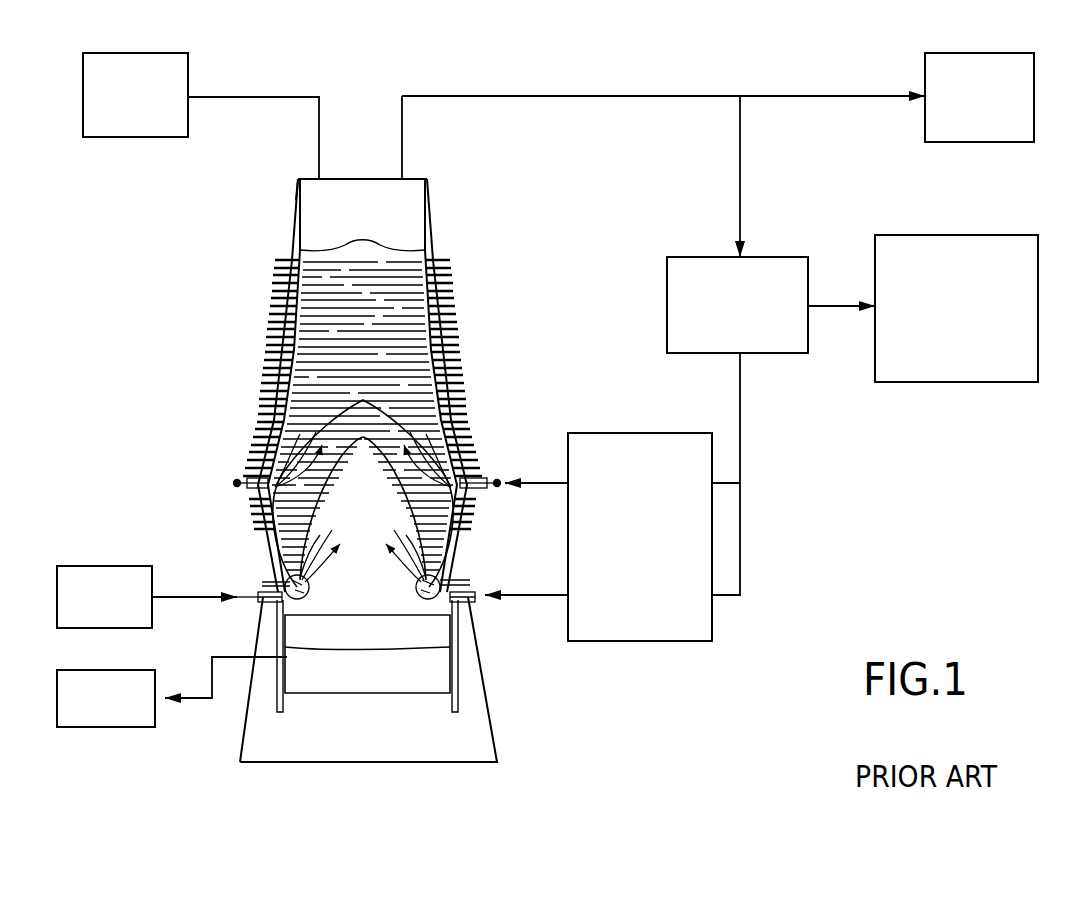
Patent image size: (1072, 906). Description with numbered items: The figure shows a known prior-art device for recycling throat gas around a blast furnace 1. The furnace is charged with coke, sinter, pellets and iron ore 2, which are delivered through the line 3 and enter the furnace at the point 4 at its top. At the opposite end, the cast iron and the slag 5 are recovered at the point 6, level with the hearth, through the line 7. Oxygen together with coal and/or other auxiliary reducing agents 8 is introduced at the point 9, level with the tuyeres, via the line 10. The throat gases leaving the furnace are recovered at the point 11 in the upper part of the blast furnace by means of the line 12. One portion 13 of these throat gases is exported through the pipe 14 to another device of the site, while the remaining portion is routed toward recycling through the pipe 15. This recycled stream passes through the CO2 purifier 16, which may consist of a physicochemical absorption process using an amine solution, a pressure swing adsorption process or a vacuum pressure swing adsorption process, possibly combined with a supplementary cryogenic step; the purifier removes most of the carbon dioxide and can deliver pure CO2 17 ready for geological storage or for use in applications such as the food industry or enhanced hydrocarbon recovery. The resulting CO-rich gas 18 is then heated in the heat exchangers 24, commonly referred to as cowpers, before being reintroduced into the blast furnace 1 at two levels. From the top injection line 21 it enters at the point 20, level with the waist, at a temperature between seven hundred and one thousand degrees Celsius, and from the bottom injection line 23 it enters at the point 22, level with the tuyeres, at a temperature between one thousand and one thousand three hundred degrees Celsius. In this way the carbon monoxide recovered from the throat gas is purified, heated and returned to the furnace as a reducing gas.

The blast furnace 1 is at (208, 284).
The iron ore 2 is at (135, 95).
The line 3 is at (262, 97).
The point 4 is at (318, 178).
The cast iron and slag 5 is at (106, 698).
The point 6 is at (290, 662).
The line 7 is at (220, 657).
The oxygen and coal and/or other auxiliary reducing agents 8 is at (104, 597).
The point 9 is at (290, 598).
The line 10 is at (185, 596).
The point 11 is at (404, 178).
The line 12 is at (462, 96).
The portion of throat gases 13 is at (979, 97).
The pipe 14 is at (810, 96).
The pipe 15 is at (738, 180).
The CO2 purifier 16 is at (737, 305).
The pure CO2 17 is at (923, 308).
The CO-rich gas 18 is at (740, 418).
The point 20 is at (462, 483).
The top injection line 21 is at (542, 483).
The point 22 is at (445, 602).
The bottom injection line 23 is at (530, 597).
The heat exchangers 24 is at (640, 537).